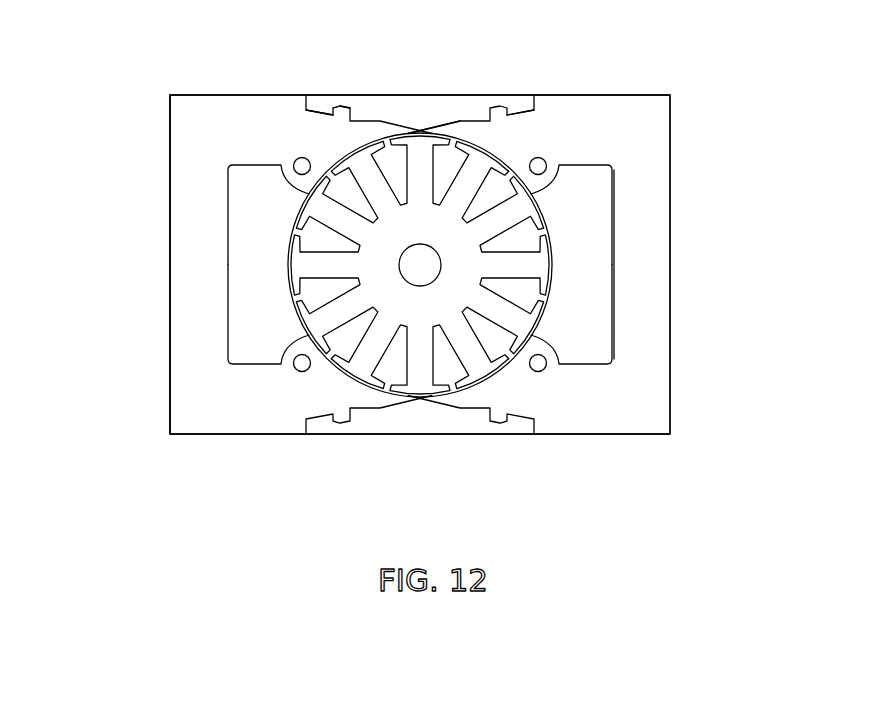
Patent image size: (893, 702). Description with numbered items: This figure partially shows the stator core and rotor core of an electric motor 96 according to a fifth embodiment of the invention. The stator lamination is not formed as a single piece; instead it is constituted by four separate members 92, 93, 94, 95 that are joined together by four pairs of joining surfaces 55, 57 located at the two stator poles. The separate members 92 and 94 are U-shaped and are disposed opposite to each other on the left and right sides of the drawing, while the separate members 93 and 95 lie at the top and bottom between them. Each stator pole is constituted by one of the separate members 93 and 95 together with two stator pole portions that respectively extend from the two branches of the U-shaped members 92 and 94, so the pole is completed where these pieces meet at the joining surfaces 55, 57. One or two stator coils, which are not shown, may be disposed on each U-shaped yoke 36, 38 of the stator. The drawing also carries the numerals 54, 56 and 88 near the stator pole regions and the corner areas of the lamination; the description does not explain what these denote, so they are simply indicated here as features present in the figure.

The U-shaped yoke 36 is at (642, 187).
The U-shaped yoke 38 is at (192, 185).
The separate member 92 is at (192, 275).
The separate member 94 is at (653, 310).
The fastener holes 88 is at (325, 150).
The separate member 93 is at (413, 108).
The separate member 95 is at (423, 417).
The joining surface 57 is at (315, 110).
The tab notch 56 is at (343, 108).
The joining surface 55 is at (465, 131).
The tab shoulder 54 is at (501, 110).
The electric motor 96 is at (640, 460).